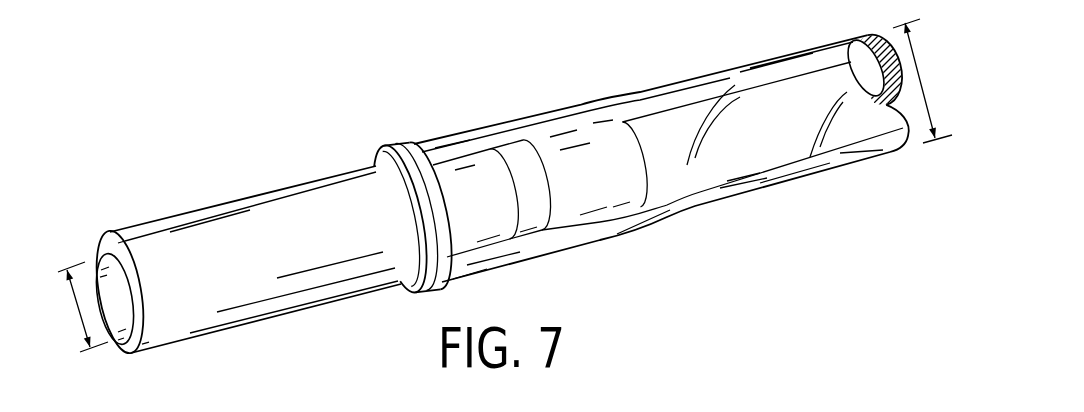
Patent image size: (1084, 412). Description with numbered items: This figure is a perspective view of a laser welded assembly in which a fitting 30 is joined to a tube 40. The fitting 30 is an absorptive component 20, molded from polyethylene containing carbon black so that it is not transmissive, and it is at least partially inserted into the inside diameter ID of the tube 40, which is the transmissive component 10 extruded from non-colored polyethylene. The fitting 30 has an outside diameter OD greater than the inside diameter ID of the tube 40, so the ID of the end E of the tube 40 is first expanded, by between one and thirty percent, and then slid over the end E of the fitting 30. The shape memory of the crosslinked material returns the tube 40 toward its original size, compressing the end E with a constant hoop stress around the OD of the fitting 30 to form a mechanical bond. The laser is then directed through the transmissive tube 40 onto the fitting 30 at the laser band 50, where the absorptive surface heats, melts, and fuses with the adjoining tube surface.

The transmissive component 10 is at (568, 113).
The absorptive component 20 is at (300, 200).
The fitting 30 is at (243, 217).
The tube 40 is at (683, 92).
The laser band 50 is at (512, 160).
The end E is at (420, 208).
The inside diameter ID is at (75, 293).
The outside diameter OD is at (918, 73).